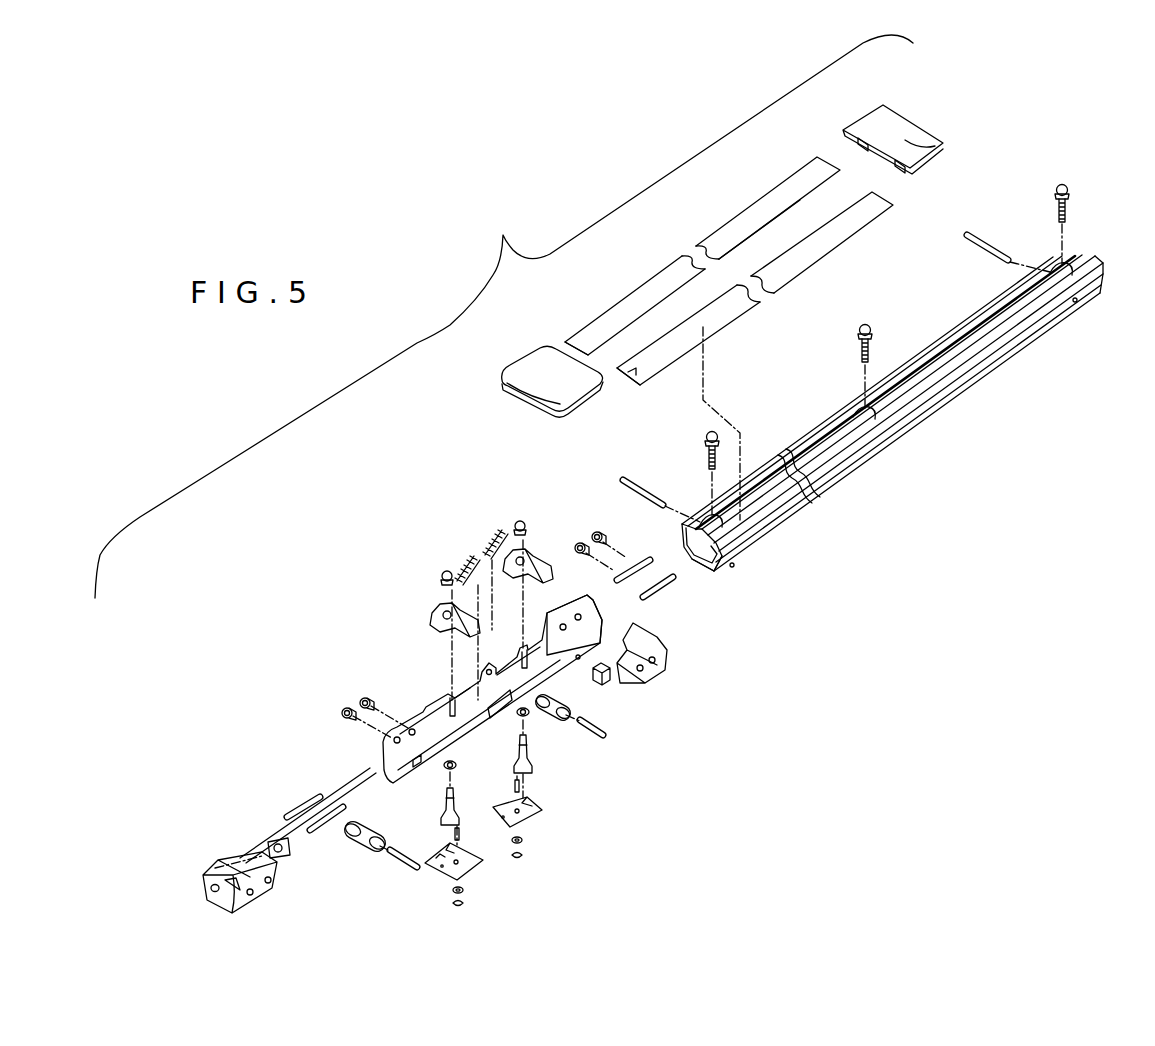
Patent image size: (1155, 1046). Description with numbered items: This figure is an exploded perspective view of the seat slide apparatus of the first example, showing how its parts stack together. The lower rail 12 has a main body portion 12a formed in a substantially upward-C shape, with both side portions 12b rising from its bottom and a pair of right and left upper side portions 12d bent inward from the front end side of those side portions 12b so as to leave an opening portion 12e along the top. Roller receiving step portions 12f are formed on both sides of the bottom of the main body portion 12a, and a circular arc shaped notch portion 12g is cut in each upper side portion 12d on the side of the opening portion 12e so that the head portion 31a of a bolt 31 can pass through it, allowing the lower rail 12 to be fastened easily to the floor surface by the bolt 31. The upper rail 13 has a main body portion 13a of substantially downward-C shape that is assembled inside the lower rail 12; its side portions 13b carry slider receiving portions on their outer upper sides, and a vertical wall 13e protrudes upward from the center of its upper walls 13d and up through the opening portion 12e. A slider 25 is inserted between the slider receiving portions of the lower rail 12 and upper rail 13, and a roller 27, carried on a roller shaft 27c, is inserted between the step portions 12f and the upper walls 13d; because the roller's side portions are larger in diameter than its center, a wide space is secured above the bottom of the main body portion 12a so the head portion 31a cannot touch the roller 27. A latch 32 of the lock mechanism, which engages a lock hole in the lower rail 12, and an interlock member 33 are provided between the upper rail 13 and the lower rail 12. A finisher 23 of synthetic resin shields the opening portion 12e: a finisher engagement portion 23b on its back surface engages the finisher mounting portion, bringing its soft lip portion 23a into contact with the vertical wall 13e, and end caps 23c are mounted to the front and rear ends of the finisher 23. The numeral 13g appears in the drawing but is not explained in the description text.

The lower rail 12 is at (849, 488).
The main body portion 12a is at (950, 385).
The side portions 12b is at (907, 418).
The upper side portions 12d is at (972, 357).
The opening portion 12e is at (847, 480).
The roller receiving step portions 12f is at (708, 565).
The notch portion 12g is at (1053, 265).
The upper rail 13 is at (427, 710).
The main body portion 13a is at (447, 706).
The side portions 13b is at (573, 657).
The upper walls 13d is at (605, 685).
The vertical wall 13e is at (402, 718).
The pivot bolts 13g is at (437, 753).
The finisher 23 is at (712, 247).
The lip portion 23a is at (773, 257).
The finisher engagement portion 23b is at (572, 343).
The end caps 23c is at (920, 135).
The slider 25 is at (640, 560).
The roller 27 is at (548, 710).
The roller shaft 27c is at (597, 733).
The bolt 31 is at (1068, 215).
The head portion 31a is at (867, 323).
The latch 32 is at (483, 857).
The interlock member 33 is at (542, 803).